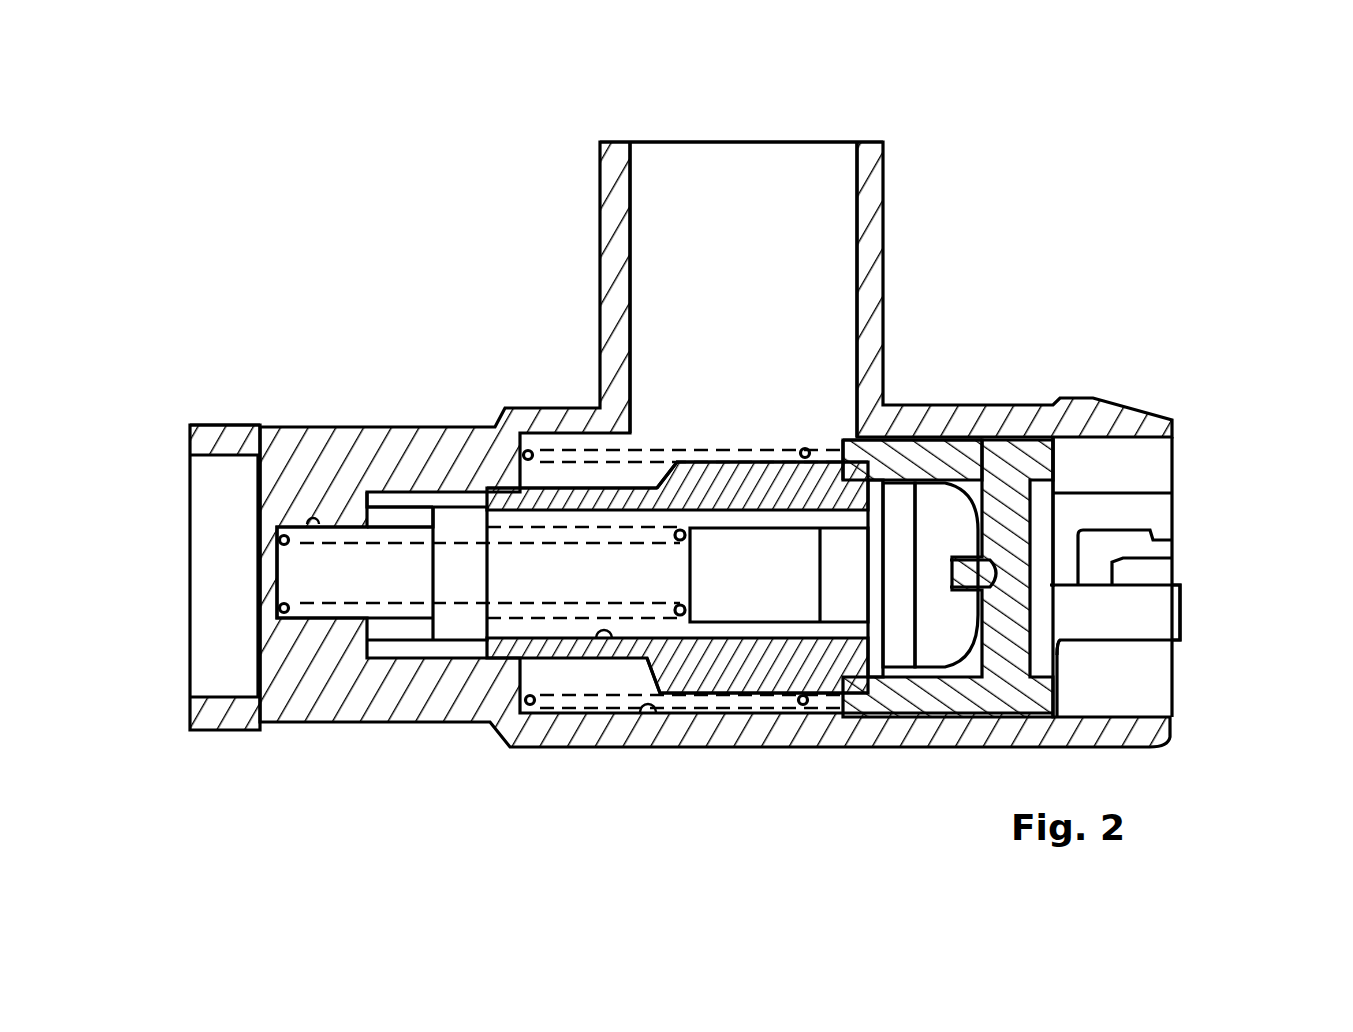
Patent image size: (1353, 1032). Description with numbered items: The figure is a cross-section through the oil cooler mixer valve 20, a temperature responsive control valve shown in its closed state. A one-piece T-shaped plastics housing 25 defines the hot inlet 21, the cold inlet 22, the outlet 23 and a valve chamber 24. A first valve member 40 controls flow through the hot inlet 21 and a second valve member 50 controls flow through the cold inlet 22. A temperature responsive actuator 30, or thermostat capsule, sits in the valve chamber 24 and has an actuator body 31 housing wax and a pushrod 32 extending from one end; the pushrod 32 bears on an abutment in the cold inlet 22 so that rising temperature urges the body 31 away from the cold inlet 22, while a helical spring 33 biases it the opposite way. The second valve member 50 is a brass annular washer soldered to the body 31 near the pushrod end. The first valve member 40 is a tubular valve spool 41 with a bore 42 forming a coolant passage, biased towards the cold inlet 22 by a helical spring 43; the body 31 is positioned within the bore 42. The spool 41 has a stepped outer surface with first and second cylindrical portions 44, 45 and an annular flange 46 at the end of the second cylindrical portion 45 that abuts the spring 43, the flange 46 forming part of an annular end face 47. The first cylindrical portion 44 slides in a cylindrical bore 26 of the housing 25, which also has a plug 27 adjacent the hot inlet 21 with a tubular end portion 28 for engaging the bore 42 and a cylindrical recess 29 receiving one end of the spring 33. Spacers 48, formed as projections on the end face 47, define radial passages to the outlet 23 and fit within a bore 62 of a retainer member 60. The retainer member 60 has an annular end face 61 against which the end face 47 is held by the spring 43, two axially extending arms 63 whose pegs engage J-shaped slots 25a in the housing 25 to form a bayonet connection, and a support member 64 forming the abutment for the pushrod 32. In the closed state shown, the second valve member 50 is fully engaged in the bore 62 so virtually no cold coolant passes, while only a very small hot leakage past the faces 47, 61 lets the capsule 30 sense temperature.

The oil cooler mixer valve 20 is at (905, 186).
The hot inlet 21 is at (195, 465).
The cold inlet 22 is at (1176, 425).
The outlet 23 is at (598, 185).
The valve chamber 24 is at (645, 712).
The housing 25 is at (210, 423).
The J-shaped slot 25a is at (1172, 538).
The cylindrical bore 26 is at (415, 656).
The plug 27 is at (420, 505).
The tubular end portion 28 is at (380, 525).
The cylindrical recess 29 is at (286, 538).
The temperature responsive actuator 30 is at (765, 640).
The actuator body 31 is at (820, 640).
The pushrod 32 is at (1075, 658).
The helical spring 33 is at (290, 612).
The first valve member 40 is at (703, 705).
The tubular valve spool 41 is at (600, 488).
The bore 42 is at (603, 636).
The helical spring 43 is at (527, 705).
The first cylindrical portion 44 is at (548, 488).
The second cylindrical portion 45 is at (705, 448).
The annular flange 46 is at (830, 440).
The annular end face 47 is at (885, 405).
The spacers 48 is at (878, 680).
The second valve member 50 is at (935, 718).
The retainer member 60 is at (1107, 403).
The annular end face 61 is at (928, 437).
The bore 62 is at (985, 437).
The axially extending arms 63 is at (1180, 607).
The support member 64 is at (1172, 496).